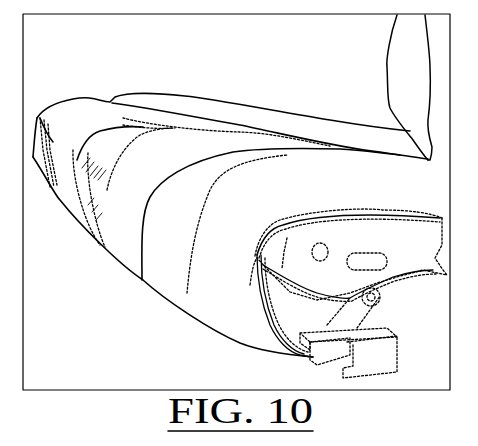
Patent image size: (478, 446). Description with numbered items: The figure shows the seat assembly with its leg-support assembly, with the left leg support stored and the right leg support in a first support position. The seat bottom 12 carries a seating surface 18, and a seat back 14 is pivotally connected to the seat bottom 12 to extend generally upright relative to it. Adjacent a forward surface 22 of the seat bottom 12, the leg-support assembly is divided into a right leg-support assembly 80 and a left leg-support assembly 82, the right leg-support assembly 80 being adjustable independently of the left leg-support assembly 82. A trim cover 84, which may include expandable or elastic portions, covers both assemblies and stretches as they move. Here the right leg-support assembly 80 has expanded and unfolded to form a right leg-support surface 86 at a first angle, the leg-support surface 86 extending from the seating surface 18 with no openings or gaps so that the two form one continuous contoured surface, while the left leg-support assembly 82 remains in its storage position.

The seat bottom 12 is at (377, 167).
The seat back 14 is at (397, 45).
The seating surface 18 is at (241, 178).
The forward surface 22 is at (190, 140).
The right leg-support assembly 80 is at (32, 157).
The left leg-support assembly 82 is at (157, 263).
The trim cover 84 is at (138, 95).
The right leg-support surface 86 is at (38, 120).